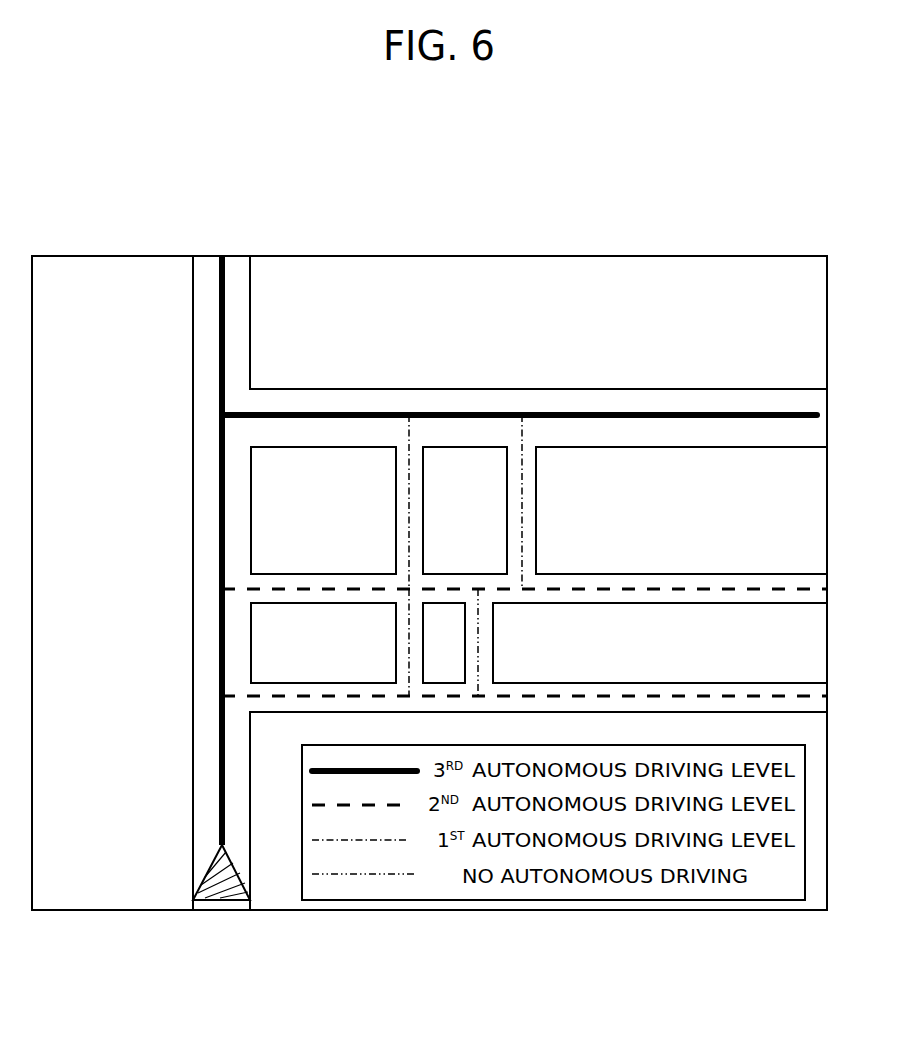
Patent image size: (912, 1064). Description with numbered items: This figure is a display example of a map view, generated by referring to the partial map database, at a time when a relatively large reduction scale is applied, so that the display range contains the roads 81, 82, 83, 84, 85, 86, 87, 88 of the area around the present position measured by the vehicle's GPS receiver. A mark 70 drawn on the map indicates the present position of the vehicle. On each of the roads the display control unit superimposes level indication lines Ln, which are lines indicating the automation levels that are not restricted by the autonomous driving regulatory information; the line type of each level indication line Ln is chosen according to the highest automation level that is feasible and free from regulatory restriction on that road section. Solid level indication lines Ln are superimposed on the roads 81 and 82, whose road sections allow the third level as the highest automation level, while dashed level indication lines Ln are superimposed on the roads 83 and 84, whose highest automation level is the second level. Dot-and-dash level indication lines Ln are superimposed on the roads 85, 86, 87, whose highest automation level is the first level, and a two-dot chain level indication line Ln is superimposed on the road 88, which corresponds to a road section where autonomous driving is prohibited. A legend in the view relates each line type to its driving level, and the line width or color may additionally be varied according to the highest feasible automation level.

The level indication line Ln is at (220, 367).
The mark 70 is at (210, 880).
The road 81 is at (193, 770).
The road 82 is at (370, 396).
The road 83 is at (320, 690).
The road 84 is at (343, 574).
The road 85 is at (424, 514).
The road 86 is at (536, 513).
The road 87 is at (396, 648).
The road 88 is at (493, 653).